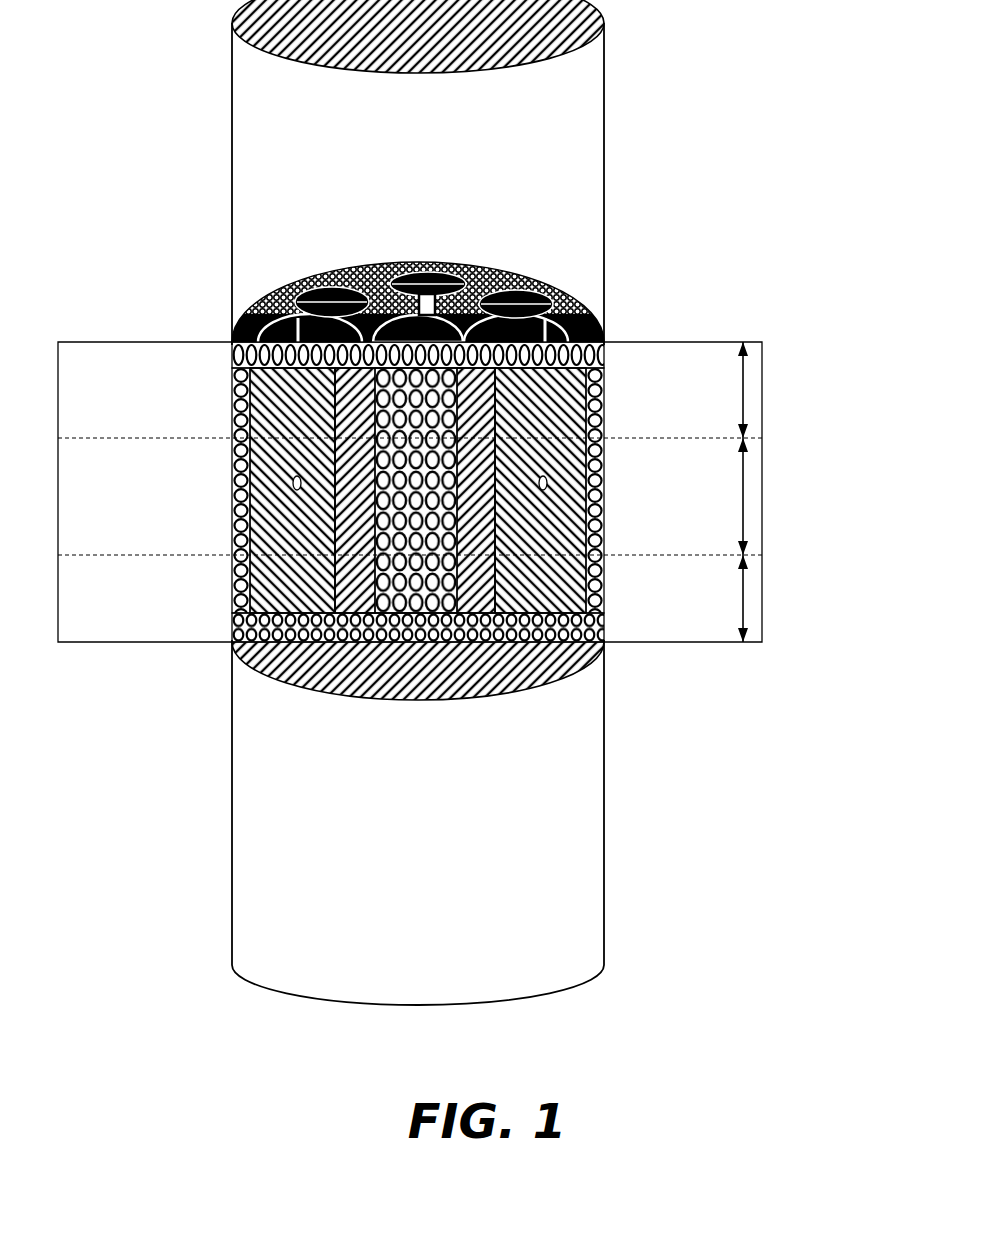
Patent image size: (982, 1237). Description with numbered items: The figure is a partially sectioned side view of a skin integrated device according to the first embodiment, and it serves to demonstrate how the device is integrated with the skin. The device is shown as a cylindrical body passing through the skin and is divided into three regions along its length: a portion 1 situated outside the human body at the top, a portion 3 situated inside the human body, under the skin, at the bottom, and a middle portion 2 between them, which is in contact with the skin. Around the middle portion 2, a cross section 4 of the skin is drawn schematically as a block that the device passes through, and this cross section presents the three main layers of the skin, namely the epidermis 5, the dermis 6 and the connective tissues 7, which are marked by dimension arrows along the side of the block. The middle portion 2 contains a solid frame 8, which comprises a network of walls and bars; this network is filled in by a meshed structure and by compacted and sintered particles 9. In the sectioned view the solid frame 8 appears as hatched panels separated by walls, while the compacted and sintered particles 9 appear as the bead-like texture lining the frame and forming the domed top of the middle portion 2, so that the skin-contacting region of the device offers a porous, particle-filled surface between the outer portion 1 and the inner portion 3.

The portion situated outside the human body 1 is at (370, 205).
The middle portion 2 is at (580, 307).
The portion situated inside the human body 3 is at (576, 912).
The cross section of the skin 4 is at (656, 352).
The epidermis 5 is at (758, 384).
The dermis 6 is at (758, 519).
The connective tissues 7 is at (758, 596).
The solid frame 8 is at (278, 395).
The compacted and sintered particles 9 is at (287, 665).